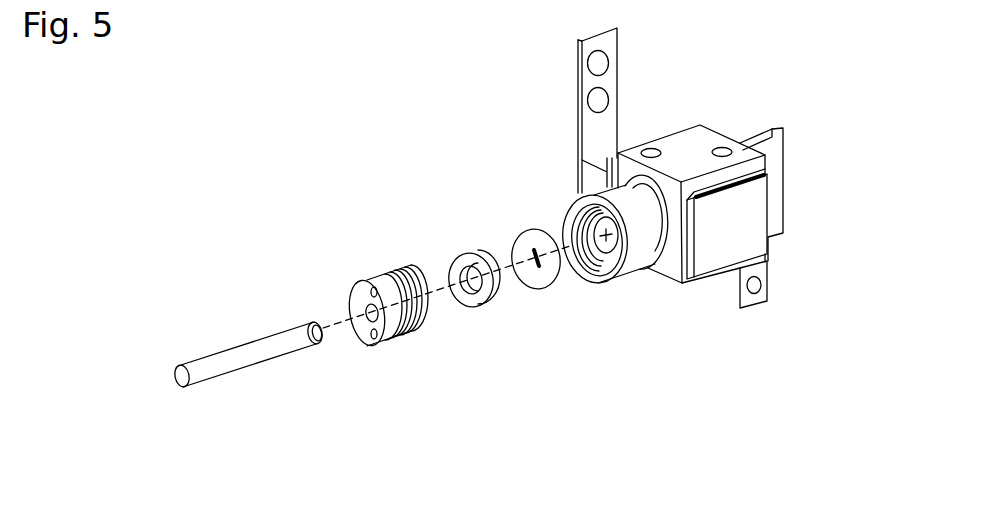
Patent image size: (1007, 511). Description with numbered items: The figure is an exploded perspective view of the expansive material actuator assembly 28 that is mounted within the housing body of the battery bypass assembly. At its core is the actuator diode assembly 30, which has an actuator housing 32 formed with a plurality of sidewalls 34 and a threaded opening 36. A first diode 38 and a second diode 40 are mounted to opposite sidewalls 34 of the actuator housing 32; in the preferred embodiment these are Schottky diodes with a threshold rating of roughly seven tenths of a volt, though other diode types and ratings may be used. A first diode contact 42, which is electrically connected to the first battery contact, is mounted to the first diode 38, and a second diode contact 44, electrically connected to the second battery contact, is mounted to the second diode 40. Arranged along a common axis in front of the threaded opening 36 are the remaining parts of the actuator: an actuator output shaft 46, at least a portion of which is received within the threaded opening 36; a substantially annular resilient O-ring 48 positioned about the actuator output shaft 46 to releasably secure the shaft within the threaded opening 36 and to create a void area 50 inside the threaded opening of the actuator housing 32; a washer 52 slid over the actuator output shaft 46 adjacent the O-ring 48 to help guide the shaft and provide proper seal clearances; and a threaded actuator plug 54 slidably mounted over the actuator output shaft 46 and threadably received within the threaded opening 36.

The expansive material actuator assembly 28 is at (447, 170).
The actuator diode assembly 30 is at (700, 125).
The actuator housing 32 is at (743, 152).
The sidewalls 34 is at (753, 168).
The threaded opening 36 is at (570, 207).
The first diode 38 is at (693, 281).
The second diode 40 is at (580, 140).
The first diode contact 42 is at (770, 272).
The second diode contact 44 is at (617, 77).
The actuator output shaft 46 is at (263, 337).
The O-ring 48 is at (542, 287).
The void area 50 is at (665, 235).
The washer 52 is at (467, 249).
The threaded actuator plug 54 is at (383, 277).